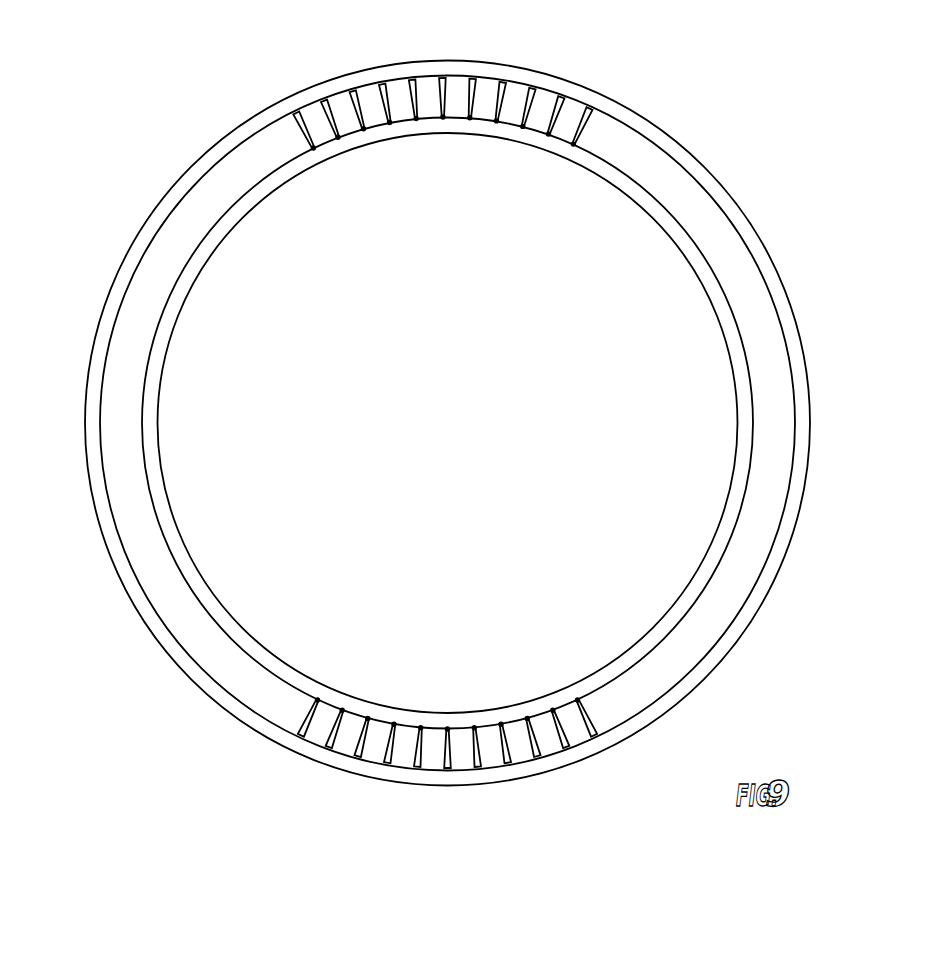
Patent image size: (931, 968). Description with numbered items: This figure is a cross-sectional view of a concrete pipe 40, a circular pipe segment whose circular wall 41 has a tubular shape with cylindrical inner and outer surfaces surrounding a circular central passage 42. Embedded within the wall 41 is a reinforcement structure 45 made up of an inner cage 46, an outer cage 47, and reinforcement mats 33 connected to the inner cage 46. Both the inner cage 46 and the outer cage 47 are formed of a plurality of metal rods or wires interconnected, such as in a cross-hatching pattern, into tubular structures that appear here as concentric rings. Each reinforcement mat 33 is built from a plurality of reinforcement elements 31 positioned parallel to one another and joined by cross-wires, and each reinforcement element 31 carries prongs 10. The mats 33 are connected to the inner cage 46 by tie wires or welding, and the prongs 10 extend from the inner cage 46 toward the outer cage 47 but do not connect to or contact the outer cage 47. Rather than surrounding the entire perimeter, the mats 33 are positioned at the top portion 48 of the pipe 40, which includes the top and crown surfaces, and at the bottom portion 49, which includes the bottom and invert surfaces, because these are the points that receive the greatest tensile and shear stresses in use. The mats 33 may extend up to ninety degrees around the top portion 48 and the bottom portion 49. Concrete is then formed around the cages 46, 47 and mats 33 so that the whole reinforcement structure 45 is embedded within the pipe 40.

The prong 10 is at (320, 102).
The reinforcement element 31 is at (415, 77).
The reinforcement mat 33 is at (353, 137).
The concrete pipe 40 is at (95, 517).
The circular wall 41 is at (112, 437).
The circular central passage 42 is at (710, 400).
The reinforcement structure 45 is at (157, 273).
The inner cage 46 is at (656, 200).
The outer cage 47 is at (740, 213).
The top portion 48 is at (493, 67).
The bottom portion 49 is at (440, 788).